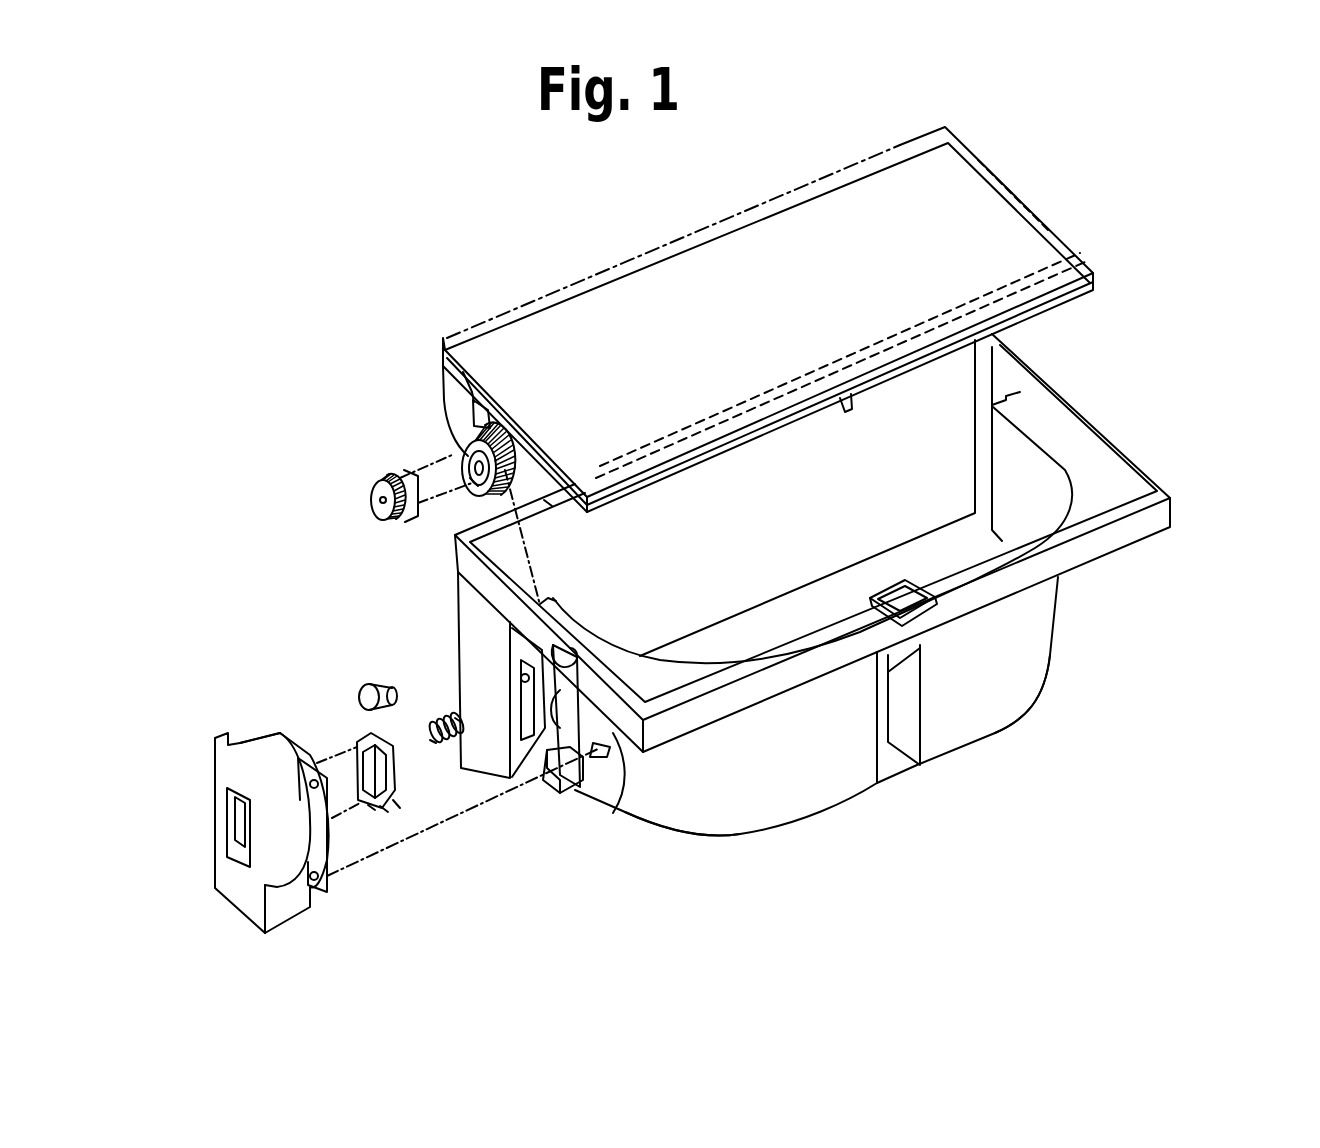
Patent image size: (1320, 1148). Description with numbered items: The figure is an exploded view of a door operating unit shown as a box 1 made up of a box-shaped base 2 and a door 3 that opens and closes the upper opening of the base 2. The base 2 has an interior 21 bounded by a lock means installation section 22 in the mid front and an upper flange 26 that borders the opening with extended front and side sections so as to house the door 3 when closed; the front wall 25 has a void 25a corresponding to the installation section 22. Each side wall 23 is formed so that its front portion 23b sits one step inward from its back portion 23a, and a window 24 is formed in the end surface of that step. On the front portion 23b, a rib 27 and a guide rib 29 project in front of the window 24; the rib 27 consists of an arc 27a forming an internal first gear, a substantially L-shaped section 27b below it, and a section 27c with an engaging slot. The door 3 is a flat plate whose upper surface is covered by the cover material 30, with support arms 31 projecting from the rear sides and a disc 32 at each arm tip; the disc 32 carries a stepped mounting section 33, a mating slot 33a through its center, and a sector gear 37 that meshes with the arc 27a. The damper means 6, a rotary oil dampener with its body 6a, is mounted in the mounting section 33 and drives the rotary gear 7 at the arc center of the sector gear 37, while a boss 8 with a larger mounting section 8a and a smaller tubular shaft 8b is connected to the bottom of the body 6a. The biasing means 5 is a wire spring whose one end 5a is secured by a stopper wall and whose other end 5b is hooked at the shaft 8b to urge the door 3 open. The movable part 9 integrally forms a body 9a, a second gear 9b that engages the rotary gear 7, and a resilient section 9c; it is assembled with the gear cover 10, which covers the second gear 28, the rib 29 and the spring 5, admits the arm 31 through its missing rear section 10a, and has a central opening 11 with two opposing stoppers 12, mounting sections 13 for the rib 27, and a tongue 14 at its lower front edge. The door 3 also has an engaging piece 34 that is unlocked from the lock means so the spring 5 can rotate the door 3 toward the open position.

The box 1 is at (1165, 330).
The box-shaped base 2 is at (1108, 435).
The door 3 is at (1058, 312).
The biasing means 5 is at (430, 728).
The one end of the wire spring 5a is at (450, 737).
The other end of the wire spring 5b is at (432, 718).
The damper means 6 is at (310, 528).
The body 6a is at (392, 520).
The rotary gear 7 is at (378, 508).
The boss 8 is at (292, 622).
The mounting section 8a is at (358, 696).
The shaft 8b is at (368, 686).
The movable part 9 is at (450, 848).
The body 9a is at (385, 812).
The second gear 9b is at (400, 810).
The resilient section 9c is at (375, 812).
The gear cover 10 is at (286, 902).
The section where the rear section is missing 10a is at (258, 737).
The opening 11 is at (225, 835).
The stoppers 12 is at (230, 808).
The mounting sections 13 is at (310, 758).
The tongue 14 is at (920, 648).
The interior 21 is at (1040, 497).
The lock means installation section 22 is at (876, 598).
The side wall 23 is at (1057, 603).
The back portion 23a is at (470, 630).
The front portion 23b is at (658, 792).
The window 24 is at (517, 680).
The front wall 25 is at (993, 722).
The void 25a is at (908, 742).
The upper flange 26 is at (1178, 497).
The rib 27 is at (678, 848).
The arc 27a is at (612, 740).
The substantially L-shaped section 27b is at (588, 800).
The section having an engaging slot 27c is at (575, 795).
The second gear 28 is at (563, 727).
The guide rib 29 is at (553, 712).
The cover material 30 is at (1026, 200).
The support arm 31 is at (446, 382).
The disc 32 is at (613, 534).
The stepped mounting section 33 is at (440, 458).
The mating slot 33a is at (472, 480).
The engaging piece 34 is at (848, 410).
The sector gear 37 is at (547, 498).